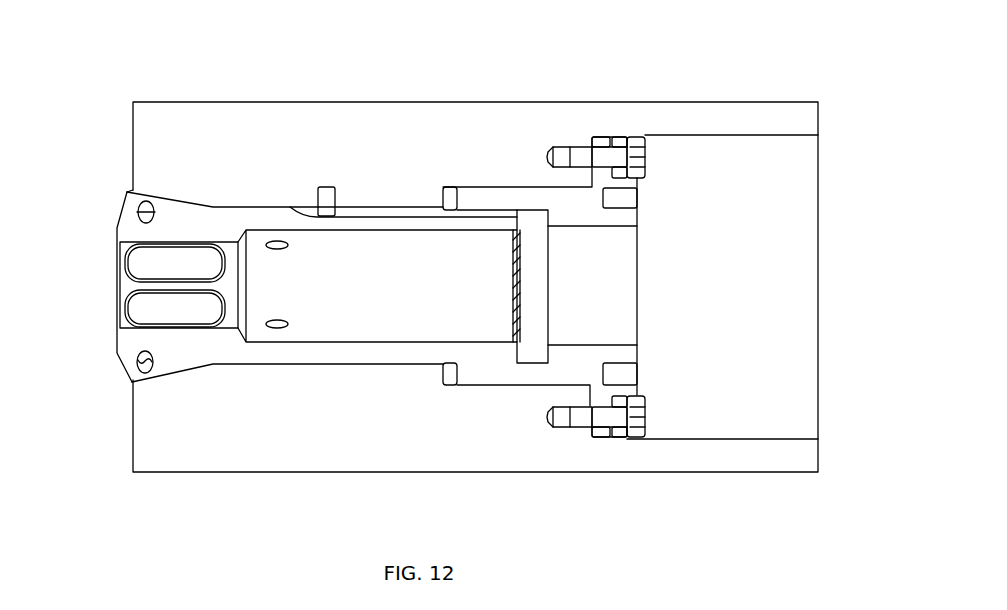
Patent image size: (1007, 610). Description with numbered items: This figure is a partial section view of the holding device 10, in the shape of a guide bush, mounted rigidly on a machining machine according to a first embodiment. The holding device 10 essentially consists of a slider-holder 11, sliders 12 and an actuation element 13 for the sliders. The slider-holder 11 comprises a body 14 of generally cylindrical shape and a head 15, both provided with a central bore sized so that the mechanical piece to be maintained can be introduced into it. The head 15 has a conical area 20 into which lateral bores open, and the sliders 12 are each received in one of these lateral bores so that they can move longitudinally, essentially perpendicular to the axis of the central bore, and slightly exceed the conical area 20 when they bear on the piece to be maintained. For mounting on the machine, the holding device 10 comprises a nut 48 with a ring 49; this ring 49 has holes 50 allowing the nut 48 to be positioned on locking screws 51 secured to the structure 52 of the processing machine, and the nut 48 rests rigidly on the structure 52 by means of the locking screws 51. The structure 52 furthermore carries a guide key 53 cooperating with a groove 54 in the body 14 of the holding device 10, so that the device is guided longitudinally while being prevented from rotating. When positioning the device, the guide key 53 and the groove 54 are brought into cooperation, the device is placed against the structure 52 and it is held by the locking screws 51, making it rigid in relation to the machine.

The holding device 10 is at (116, 184).
The slider-holder 11 is at (355, 372).
The sliders 12 is at (160, 262).
The actuation element 13 is at (124, 404).
The body 14 is at (307, 352).
The head 15 is at (169, 182).
The conical area 20 is at (173, 375).
The nut 48 is at (480, 375).
The ring 49 is at (602, 138).
The holes 50 is at (597, 432).
The locking screws 51 is at (580, 155).
The structure 52 is at (453, 127).
The guide key 53 is at (327, 202).
The groove 54 is at (372, 213).